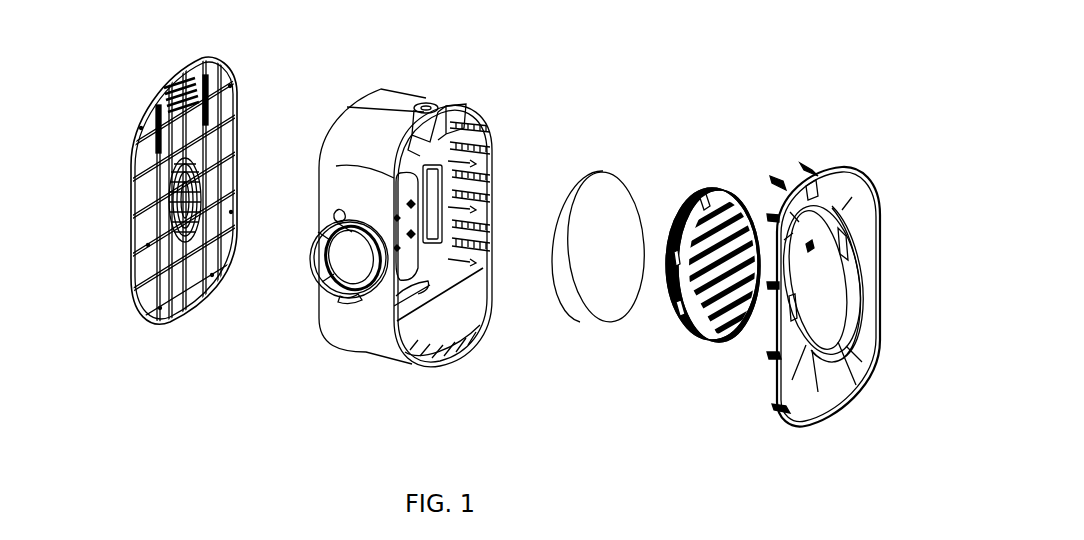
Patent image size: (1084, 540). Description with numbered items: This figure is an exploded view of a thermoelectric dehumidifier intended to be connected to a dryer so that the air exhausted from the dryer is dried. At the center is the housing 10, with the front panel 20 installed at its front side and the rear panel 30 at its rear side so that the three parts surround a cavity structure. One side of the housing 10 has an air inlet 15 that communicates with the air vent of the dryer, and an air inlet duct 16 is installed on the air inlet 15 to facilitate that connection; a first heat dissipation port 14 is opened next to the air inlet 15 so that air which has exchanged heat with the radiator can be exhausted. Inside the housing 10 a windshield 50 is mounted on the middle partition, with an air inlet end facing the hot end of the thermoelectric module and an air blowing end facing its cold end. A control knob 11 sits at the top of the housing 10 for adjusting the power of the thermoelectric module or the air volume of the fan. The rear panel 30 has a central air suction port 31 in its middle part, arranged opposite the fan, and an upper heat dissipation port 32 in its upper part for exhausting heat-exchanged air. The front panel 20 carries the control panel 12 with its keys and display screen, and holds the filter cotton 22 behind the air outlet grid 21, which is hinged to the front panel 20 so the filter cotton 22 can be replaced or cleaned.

The housing 10 is at (404, 96).
The control knob 11 is at (446, 106).
The control panel 12 is at (483, 128).
The first heat dissipation port 14 is at (338, 215).
The air inlet 15 is at (311, 277).
The air inlet duct 16 is at (348, 302).
The front panel 20 is at (861, 176).
The air outlet grid 21 is at (731, 192).
The filter cotton 22 is at (609, 230).
The rear panel 30 is at (146, 92).
The central air suction port 31 is at (136, 195).
The upper heat dissipation port 32 is at (200, 62).
The windshield 50 is at (472, 187).